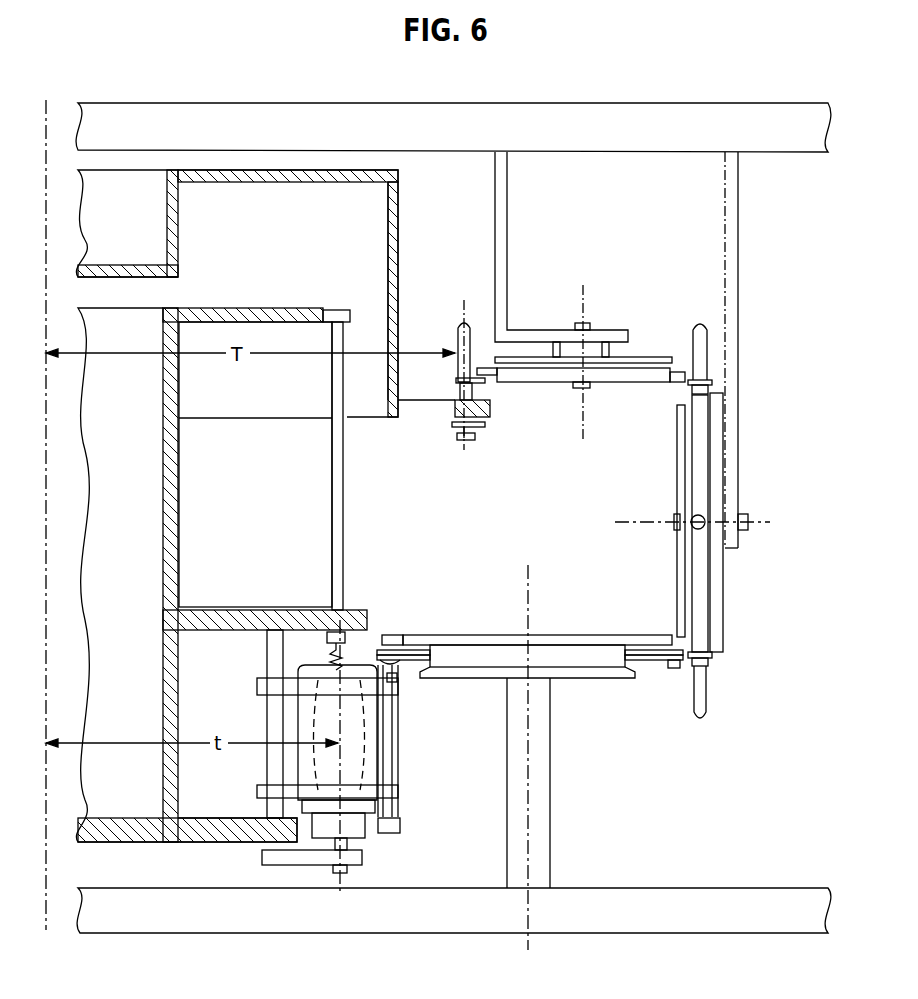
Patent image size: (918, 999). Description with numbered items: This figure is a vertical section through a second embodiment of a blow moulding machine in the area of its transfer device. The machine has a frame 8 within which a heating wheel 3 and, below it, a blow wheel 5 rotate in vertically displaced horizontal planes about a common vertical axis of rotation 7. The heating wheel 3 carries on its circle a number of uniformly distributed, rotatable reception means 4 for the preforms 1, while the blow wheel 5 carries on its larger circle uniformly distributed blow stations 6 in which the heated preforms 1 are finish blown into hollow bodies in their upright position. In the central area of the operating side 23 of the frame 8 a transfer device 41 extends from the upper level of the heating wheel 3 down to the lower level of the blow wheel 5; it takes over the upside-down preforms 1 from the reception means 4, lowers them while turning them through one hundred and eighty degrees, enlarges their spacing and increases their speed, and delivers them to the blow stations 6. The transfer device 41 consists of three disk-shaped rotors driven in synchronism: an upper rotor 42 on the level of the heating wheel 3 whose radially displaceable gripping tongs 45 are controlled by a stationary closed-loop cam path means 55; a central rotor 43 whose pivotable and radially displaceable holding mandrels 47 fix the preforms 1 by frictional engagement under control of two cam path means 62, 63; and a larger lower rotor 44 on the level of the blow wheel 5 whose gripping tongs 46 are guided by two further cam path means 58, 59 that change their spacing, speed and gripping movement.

The preform 1 is at (703, 352).
The heating wheel 3 is at (347, 170).
The reception means 4 is at (458, 403).
The blow wheel 5 is at (217, 833).
The blow station 6 is at (372, 840).
The vertical axis of rotation 7 is at (48, 117).
The frame 8 is at (708, 120).
The operating side 23 is at (795, 205).
The transfer device 41 is at (632, 255).
The upper rotor 42 is at (556, 382).
The central rotor 43 is at (700, 442).
The lower rotor 44 is at (595, 658).
The gripping tongs 45 is at (488, 343).
The gripping tongs 46 is at (402, 635).
The holding mandrel 47 is at (708, 660).
The cam path means 55 is at (525, 362).
The cam path means 58 is at (460, 640).
The cam path means 59 is at (560, 680).
The cam path means 62 is at (684, 553).
The cam path means 63 is at (716, 582).